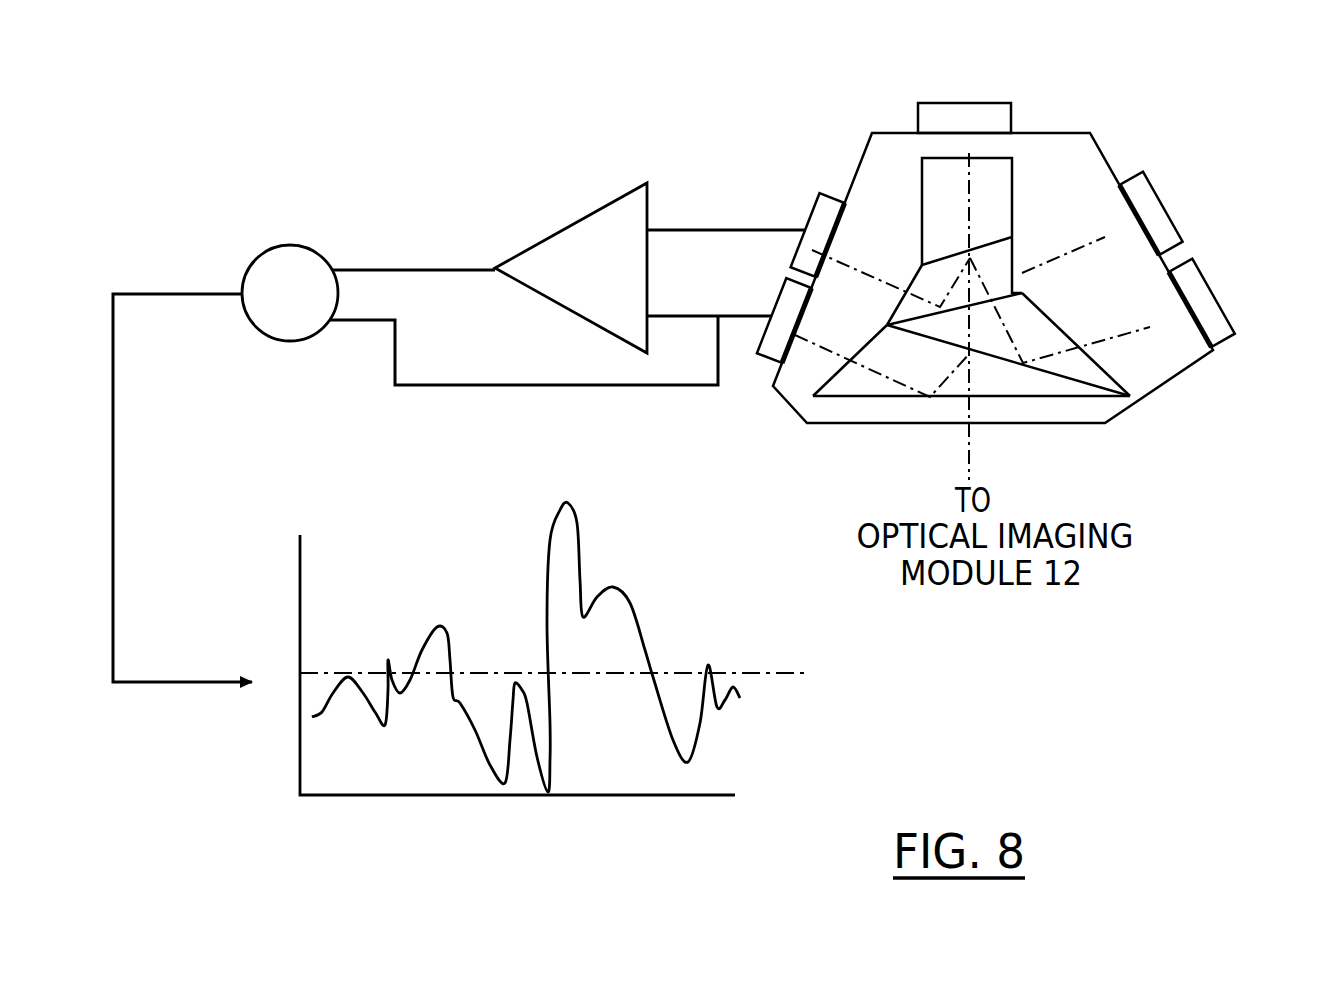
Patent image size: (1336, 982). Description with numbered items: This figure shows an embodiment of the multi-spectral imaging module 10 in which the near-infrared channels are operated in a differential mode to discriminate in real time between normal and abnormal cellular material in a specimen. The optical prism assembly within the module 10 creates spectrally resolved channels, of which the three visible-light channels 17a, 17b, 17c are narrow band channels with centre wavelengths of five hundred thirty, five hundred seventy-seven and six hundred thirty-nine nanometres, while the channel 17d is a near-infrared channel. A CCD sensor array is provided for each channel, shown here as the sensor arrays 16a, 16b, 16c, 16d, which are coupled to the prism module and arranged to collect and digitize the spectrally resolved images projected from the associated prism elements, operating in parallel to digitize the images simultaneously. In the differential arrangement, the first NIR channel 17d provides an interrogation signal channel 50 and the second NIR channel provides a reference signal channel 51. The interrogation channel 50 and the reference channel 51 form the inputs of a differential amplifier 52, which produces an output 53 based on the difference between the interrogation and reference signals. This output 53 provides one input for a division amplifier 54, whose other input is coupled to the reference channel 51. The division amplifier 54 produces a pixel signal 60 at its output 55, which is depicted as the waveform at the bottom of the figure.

The multi-spectral imaging module 10 is at (1050, 82).
The CCD sensor array 16a is at (1228, 296).
The CCD sensor array 16b is at (1172, 198).
The CCD sensor array 16c is at (952, 88).
The CCD sensor array 16d is at (797, 188).
The visible-light channel 17a is at (1110, 337).
The visible-light channel 17b is at (1058, 257).
The visible-light channel 17c is at (973, 208).
The first NIR channel 17d is at (868, 275).
The interrogation signal channel 50 is at (715, 228).
The reference signal channel 51 is at (692, 314).
The differential amplifier 52 is at (575, 220).
The output of differential amplifier 53 is at (430, 267).
The division amplifier 54 is at (305, 250).
The output of division amplifier 55 is at (187, 292).
The pixel signal 60 is at (578, 552).